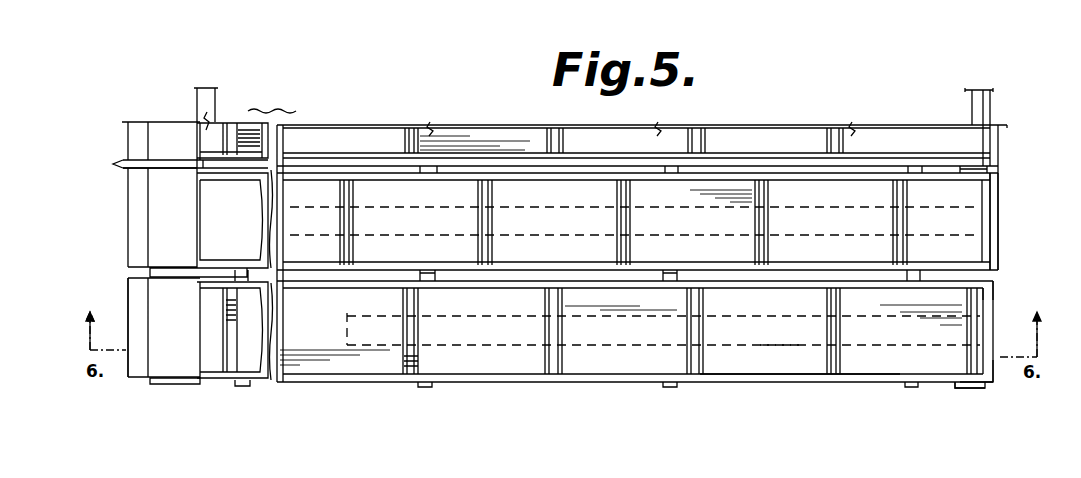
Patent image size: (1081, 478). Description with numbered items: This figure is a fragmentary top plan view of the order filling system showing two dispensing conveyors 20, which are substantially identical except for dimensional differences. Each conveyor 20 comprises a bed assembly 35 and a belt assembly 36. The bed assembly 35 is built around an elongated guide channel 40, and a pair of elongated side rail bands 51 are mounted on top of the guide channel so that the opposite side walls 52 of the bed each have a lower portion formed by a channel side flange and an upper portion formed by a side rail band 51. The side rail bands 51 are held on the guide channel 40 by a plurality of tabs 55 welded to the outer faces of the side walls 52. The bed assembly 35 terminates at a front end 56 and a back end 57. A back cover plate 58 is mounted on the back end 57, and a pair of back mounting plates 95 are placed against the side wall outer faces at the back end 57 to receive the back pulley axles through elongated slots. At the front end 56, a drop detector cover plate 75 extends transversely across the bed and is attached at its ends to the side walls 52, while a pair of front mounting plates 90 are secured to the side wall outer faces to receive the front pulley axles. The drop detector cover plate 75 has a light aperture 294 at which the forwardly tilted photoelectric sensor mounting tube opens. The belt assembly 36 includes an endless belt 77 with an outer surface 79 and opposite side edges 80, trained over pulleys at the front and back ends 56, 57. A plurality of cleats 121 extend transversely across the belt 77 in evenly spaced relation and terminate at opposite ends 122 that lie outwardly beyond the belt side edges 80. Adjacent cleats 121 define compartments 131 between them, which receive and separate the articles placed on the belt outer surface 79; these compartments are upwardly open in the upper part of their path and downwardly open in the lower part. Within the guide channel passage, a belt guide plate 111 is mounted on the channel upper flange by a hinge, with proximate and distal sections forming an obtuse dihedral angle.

The conveyor 20 is at (113, 162).
The back end 57 is at (127, 288).
The back cover plate 58 is at (128, 337).
The bed assembly 35 is at (125, 385).
The back mounting plates 95 is at (182, 384).
The cleat ends 122 is at (764, 283).
The belt guide plate 111 is at (347, 313).
The cleats 121 is at (415, 333).
The belt side edges 80 is at (620, 373).
The compartments 131 is at (760, 226).
The belt outer surface 79 is at (795, 336).
The light aperture 294 is at (1000, 228).
The front end 56 is at (998, 302).
The tabs 55 is at (429, 383).
The side rail bands 51 is at (531, 383).
The side walls 52 is at (740, 383).
The endless belt 77 is at (808, 383).
The belt assembly 36 is at (875, 385).
The guide channel 40 is at (931, 389).
The front mounting plates 90 is at (966, 387).
The drop detector cover plate 75 is at (997, 378).